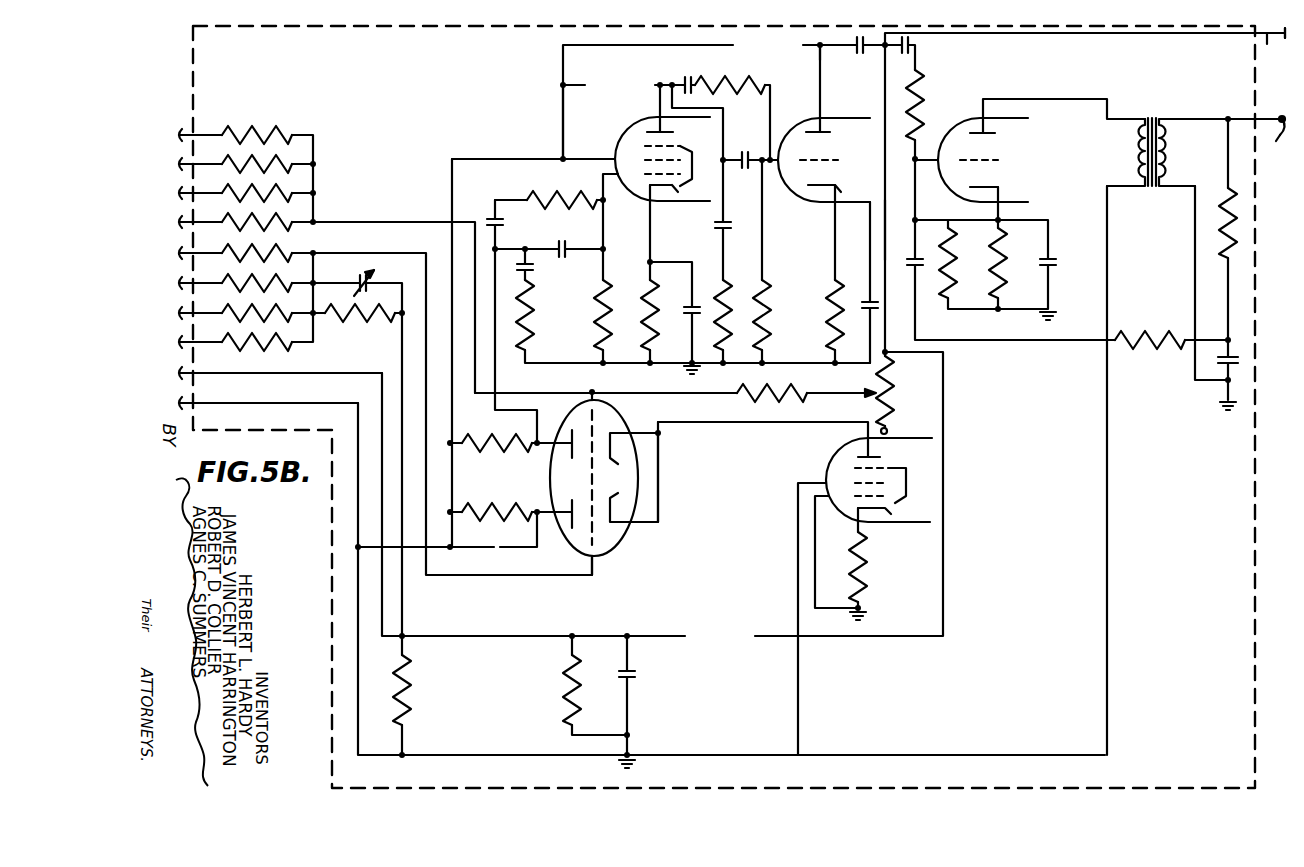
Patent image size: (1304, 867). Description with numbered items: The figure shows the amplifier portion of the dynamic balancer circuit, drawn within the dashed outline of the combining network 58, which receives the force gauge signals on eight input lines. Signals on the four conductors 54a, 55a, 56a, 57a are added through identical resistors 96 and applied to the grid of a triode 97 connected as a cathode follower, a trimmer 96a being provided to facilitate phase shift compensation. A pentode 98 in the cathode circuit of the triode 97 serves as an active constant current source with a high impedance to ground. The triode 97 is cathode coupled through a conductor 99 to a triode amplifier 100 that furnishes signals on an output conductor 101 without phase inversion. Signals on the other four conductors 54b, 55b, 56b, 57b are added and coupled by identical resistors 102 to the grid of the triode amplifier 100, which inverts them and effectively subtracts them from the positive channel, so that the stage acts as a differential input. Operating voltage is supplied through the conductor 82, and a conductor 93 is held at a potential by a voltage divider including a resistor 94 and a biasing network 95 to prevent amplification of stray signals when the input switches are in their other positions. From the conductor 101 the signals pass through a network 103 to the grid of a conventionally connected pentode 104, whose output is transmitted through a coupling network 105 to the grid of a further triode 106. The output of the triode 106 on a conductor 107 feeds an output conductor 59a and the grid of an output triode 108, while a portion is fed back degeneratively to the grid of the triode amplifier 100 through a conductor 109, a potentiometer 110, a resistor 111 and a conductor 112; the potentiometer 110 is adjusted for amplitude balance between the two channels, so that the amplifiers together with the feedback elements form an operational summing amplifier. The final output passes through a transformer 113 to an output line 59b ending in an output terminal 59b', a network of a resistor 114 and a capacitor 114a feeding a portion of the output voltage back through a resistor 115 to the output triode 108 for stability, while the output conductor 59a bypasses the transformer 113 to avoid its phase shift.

The combining network 58 is at (193, 44).
The conductor 54b is at (173, 149).
The conductor 55b is at (173, 178).
The conductor 56b is at (173, 207).
The conductor 57b is at (173, 236).
The conductor 54a is at (173, 267).
The conductor 55a is at (173, 297).
The conductor 56a is at (173, 327).
The conductor 57a is at (173, 357).
The identical resistors 102 is at (277, 142).
The identical resistors 96 is at (277, 260).
The trimmer 96a is at (345, 306).
The conductor 93 is at (217, 377).
The conductor 82 is at (217, 407).
The resistor 94 is at (406, 688).
The biasing network 95 is at (612, 706).
The output conductor 101 is at (494, 380).
The network 103 is at (560, 240).
The pentode 104 is at (686, 206).
The coupling network 105 is at (760, 115).
The triode 106 is at (805, 204).
The conductor 107 is at (822, 82).
The output triode 108 is at (958, 119).
The conductor 109 is at (883, 218).
The potentiometer 110 is at (890, 392).
The resistor 111 is at (798, 387).
The conductor 112 is at (694, 394).
The triode amplifier 100 is at (620, 408).
The conductor 99 is at (650, 440).
The triode 97 is at (618, 548).
The pentode 98 is at (886, 436).
The transformer 113 is at (1147, 116).
The resistor 114 is at (1240, 226).
The capacitor 114a is at (1238, 360).
The resistor 115 is at (1151, 337).
The output conductor 59a is at (1256, 46).
The output line 59b is at (1280, 111).
The output terminal 59b' is at (1278, 148).